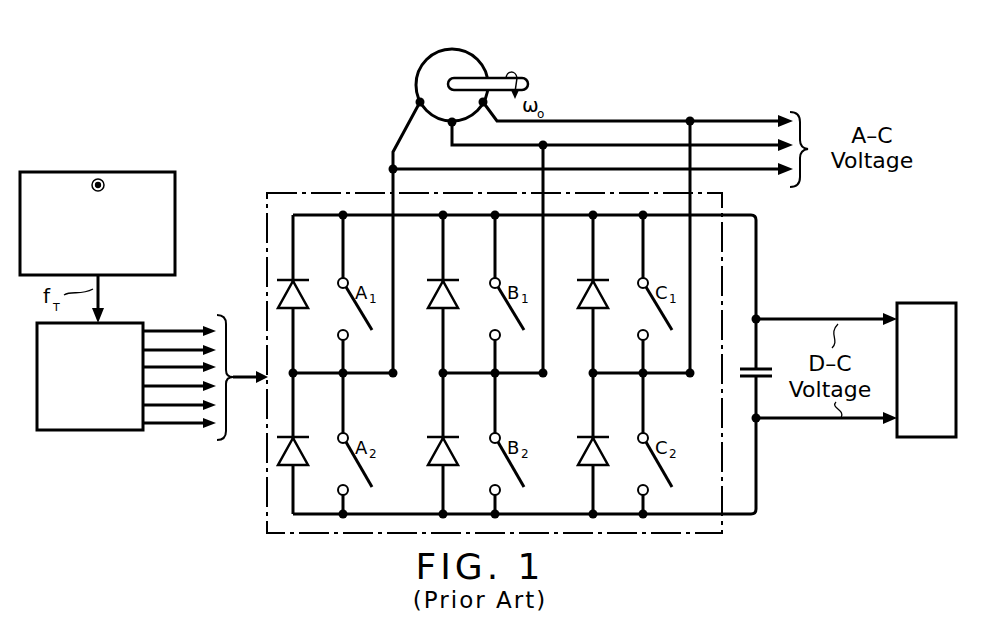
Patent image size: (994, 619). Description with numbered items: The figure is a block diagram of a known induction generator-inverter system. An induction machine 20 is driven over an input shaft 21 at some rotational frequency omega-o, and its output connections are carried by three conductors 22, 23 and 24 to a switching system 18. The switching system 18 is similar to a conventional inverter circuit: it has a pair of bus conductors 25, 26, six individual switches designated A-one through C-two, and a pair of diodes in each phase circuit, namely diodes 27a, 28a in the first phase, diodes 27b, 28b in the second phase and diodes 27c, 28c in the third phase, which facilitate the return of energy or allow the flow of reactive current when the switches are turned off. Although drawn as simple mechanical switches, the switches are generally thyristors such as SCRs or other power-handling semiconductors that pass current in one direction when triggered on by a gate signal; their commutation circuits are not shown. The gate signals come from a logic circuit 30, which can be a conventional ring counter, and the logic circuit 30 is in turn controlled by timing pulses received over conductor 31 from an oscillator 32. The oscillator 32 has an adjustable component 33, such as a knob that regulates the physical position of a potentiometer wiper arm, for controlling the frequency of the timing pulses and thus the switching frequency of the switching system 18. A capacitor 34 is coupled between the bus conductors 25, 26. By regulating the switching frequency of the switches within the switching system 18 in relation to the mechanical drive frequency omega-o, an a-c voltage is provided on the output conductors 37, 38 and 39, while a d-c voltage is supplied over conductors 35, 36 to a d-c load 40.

The switching system 18 is at (267, 517).
The induction machine 20 is at (417, 70).
The input shaft 21 is at (498, 79).
The conductor 22 is at (386, 166).
The conductor 23 is at (540, 166).
The conductor 24 is at (690, 166).
The bus conductor 25 is at (748, 213).
The bus conductor 26 is at (744, 517).
The diode 27a is at (302, 312).
The diode 27b is at (452, 312).
The diode 27c is at (602, 312).
The diode 28a is at (302, 469).
The diode 28b is at (452, 469).
The diode 28c is at (602, 469).
The logic circuit 30 is at (95, 431).
The conductor 31 is at (103, 291).
The oscillator 32 is at (175, 204).
The adjustable component 33 is at (104, 185).
The capacitor 34 is at (750, 367).
The conductor 35 is at (825, 317).
The conductor 36 is at (822, 421).
The output conductor 37 is at (715, 120).
The output conductor 38 is at (715, 143).
The output conductor 39 is at (715, 167).
The d-c load 40 is at (934, 302).